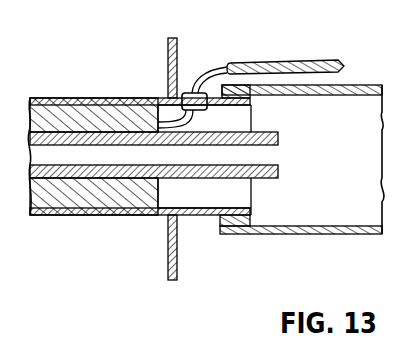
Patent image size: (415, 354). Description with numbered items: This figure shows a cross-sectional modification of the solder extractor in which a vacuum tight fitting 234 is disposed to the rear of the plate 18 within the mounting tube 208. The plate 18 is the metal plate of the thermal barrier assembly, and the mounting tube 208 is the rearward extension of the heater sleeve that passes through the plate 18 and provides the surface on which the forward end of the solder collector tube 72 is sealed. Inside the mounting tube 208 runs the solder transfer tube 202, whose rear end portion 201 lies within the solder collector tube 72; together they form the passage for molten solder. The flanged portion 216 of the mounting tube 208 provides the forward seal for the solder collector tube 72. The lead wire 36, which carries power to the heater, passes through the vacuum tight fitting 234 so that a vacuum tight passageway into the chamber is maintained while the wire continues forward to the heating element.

The plate 18 is at (167, 62).
The lead wire 36 is at (290, 71).
The solder collector tube 72 is at (332, 233).
The rear end portion 201 is at (281, 142).
The solder transfer tube 202 is at (280, 174).
The mounting tube 208 is at (200, 215).
The flanged portion 216 is at (249, 222).
The vacuum tight fitting 234 is at (196, 93).